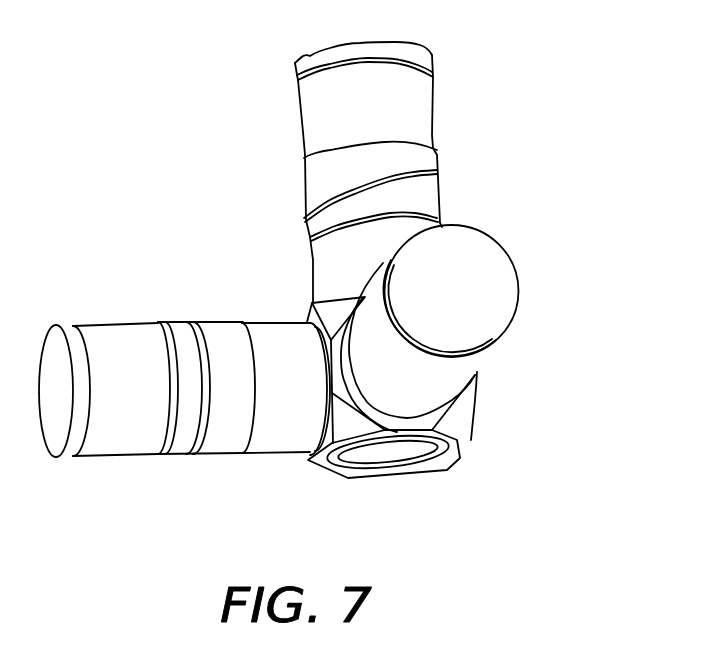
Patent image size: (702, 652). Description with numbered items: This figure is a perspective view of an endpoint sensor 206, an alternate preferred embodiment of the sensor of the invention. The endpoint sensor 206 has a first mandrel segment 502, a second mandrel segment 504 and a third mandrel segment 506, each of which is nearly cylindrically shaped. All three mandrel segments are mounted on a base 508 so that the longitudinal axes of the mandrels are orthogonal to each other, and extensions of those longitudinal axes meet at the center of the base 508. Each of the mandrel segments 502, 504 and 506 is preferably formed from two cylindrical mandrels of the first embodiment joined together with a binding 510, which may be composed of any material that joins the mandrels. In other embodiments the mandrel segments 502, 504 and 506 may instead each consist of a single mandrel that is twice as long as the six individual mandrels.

The endpoint sensor 206 is at (240, 107).
The first mandrel segment 502 is at (432, 112).
The second mandrel segment 504 is at (477, 353).
The third mandrel segment 506 is at (145, 457).
The base 508 is at (473, 440).
The binding 510 is at (443, 205).